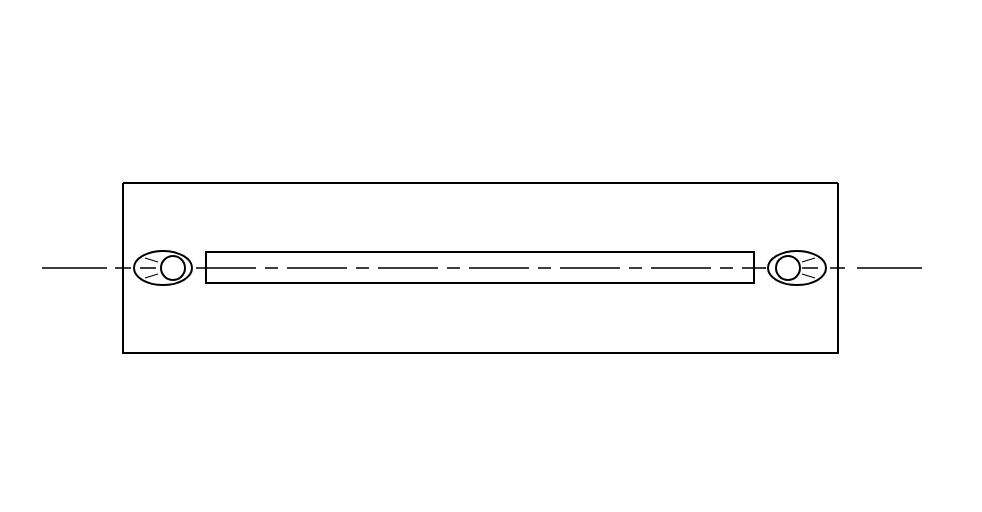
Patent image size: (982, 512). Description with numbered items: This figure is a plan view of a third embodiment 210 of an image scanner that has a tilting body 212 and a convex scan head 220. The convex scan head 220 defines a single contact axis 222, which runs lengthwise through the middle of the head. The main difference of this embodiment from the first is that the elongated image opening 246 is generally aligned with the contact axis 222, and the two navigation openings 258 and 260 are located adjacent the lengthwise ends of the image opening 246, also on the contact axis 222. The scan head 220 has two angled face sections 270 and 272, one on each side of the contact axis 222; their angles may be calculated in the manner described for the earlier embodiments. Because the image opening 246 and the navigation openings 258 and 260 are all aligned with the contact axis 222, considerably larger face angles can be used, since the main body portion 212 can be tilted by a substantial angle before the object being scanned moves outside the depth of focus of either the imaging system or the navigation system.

The third embodiment 210 is at (253, 86).
The tilting body 212 is at (194, 183).
The convex scan head 220 is at (660, 183).
The contact axis 222 is at (78, 266).
The image opening 246 is at (345, 253).
The angled face section 270 is at (457, 228).
The angled face section 272 is at (502, 334).
The navigation opening 258 is at (163, 285).
The navigation opening 260 is at (797, 285).